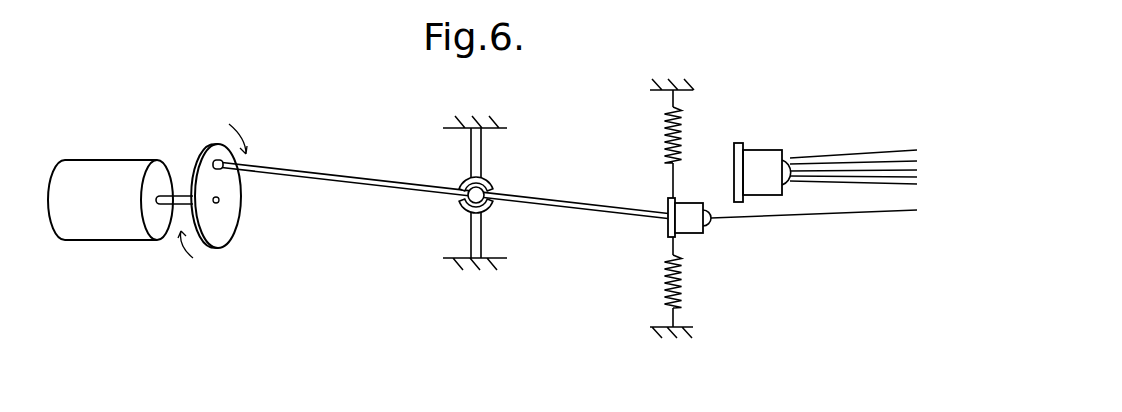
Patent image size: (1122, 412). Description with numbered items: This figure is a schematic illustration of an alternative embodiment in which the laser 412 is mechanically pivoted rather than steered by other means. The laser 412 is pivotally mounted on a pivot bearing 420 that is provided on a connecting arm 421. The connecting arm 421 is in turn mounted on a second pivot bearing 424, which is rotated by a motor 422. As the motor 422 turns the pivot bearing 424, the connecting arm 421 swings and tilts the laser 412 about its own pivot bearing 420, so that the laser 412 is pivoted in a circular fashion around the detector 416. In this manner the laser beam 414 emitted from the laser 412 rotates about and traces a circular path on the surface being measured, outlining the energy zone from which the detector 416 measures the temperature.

The laser 412 is at (683, 202).
The laser beam 414 is at (843, 213).
The detector 416 is at (777, 150).
The pivot bearing 420 is at (492, 178).
The connecting arm 421 is at (572, 209).
The motor 422 is at (127, 241).
The pivot bearing 424 is at (227, 170).